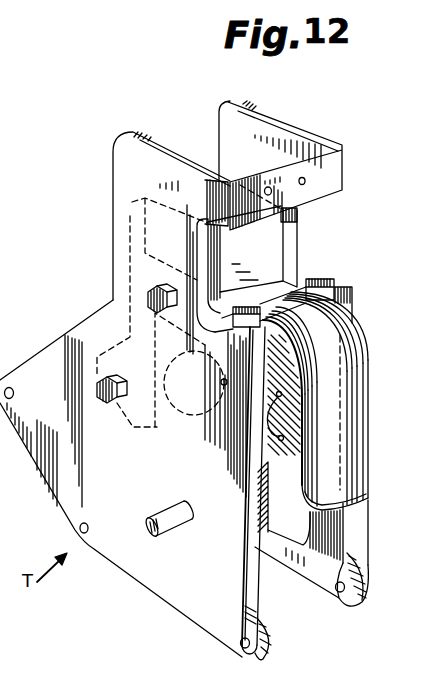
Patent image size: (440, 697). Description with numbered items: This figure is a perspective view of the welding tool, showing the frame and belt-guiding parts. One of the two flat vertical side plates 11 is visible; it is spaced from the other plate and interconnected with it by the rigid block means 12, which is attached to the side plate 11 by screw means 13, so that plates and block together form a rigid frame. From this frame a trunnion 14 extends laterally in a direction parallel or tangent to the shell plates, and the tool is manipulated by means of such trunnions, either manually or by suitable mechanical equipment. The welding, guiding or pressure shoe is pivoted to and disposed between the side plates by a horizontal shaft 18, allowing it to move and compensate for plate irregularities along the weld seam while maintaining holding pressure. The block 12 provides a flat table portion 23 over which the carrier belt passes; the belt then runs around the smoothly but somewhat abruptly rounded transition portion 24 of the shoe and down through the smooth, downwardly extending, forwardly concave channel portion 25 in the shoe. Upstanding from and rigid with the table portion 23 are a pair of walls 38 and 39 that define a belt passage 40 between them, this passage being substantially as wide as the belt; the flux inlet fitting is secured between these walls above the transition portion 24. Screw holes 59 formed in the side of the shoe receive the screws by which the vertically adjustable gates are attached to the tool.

The side plate 11 is at (57, 330).
The rigid block means 12 is at (218, 138).
The screw means 13 is at (148, 297).
The trunnions 14 is at (150, 531).
The horizontal shaft 18 is at (222, 386).
The table portion 23 is at (256, 268).
The transition portion 24 is at (318, 332).
The channel portion 25 is at (332, 437).
The wall 38 is at (292, 214).
The wall 39 is at (130, 222).
The belt passage 40 is at (110, 151).
The screw holes 59 is at (280, 441).